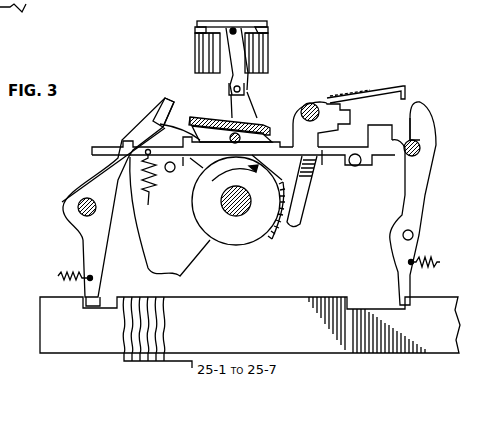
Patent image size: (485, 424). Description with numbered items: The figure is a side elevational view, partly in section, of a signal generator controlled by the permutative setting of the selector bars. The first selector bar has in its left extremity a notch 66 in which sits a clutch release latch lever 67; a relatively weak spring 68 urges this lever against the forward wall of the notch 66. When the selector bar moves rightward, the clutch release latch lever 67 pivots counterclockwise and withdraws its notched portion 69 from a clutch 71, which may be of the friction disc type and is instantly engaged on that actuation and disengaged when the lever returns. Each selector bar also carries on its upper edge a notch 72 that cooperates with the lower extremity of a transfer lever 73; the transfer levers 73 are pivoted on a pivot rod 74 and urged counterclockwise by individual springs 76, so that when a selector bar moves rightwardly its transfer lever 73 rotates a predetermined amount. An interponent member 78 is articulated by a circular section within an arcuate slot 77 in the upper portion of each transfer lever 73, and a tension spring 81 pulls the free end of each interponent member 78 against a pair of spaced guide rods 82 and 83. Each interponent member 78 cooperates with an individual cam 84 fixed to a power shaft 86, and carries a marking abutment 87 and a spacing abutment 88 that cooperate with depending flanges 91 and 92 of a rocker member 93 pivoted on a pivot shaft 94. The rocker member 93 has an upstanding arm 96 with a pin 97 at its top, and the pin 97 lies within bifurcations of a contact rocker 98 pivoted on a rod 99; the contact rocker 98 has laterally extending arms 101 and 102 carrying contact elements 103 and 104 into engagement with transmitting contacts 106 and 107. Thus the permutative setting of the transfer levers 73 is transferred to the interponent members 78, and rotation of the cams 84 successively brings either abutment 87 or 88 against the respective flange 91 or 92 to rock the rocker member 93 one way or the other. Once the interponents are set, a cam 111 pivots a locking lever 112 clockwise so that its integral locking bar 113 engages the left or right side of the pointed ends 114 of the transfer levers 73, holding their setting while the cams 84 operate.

The notch 66 is at (108, 299).
The clutch release latch lever 67 is at (83, 241).
The spring 68 is at (58, 272).
The notched portion 69 is at (163, 105).
The clutch 71 is at (140, 252).
The notch 72 is at (383, 308).
The transfer lever 73 is at (420, 210).
The pivot rod 74 is at (413, 235).
The spring 76 is at (440, 262).
The arcuate slot 77 is at (420, 148).
The interponent member 78 is at (322, 165).
The tension spring 81 is at (148, 200).
The guide rod 82 is at (170, 172).
The guide rod 83 is at (354, 167).
The cam 84 is at (243, 240).
The power shaft 86 is at (235, 217).
The marking abutment 87 is at (153, 133).
The spacing abutment 88 is at (293, 128).
The depending flange 91 is at (190, 108).
The depending flange 92 is at (267, 130).
The rocker member 93 is at (200, 115).
The pivot shaft 94 is at (233, 133).
The upstanding arm 96 is at (247, 104).
The pin 97 is at (245, 91).
The contact rocker 98 is at (231, 70).
The rod 99 is at (233, 28).
The laterally extending arm 101 is at (258, 22).
The laterally extending arm 102 is at (199, 25).
The contact element 103 is at (262, 32).
The contact element 104 is at (195, 34).
The transmitting contact 106 is at (264, 38).
The transmitting contact 107 is at (198, 38).
The cam 111 is at (277, 228).
The locking lever 112 is at (298, 200).
The locking bar 113 is at (405, 86).
The pointed ends 114 is at (420, 105).